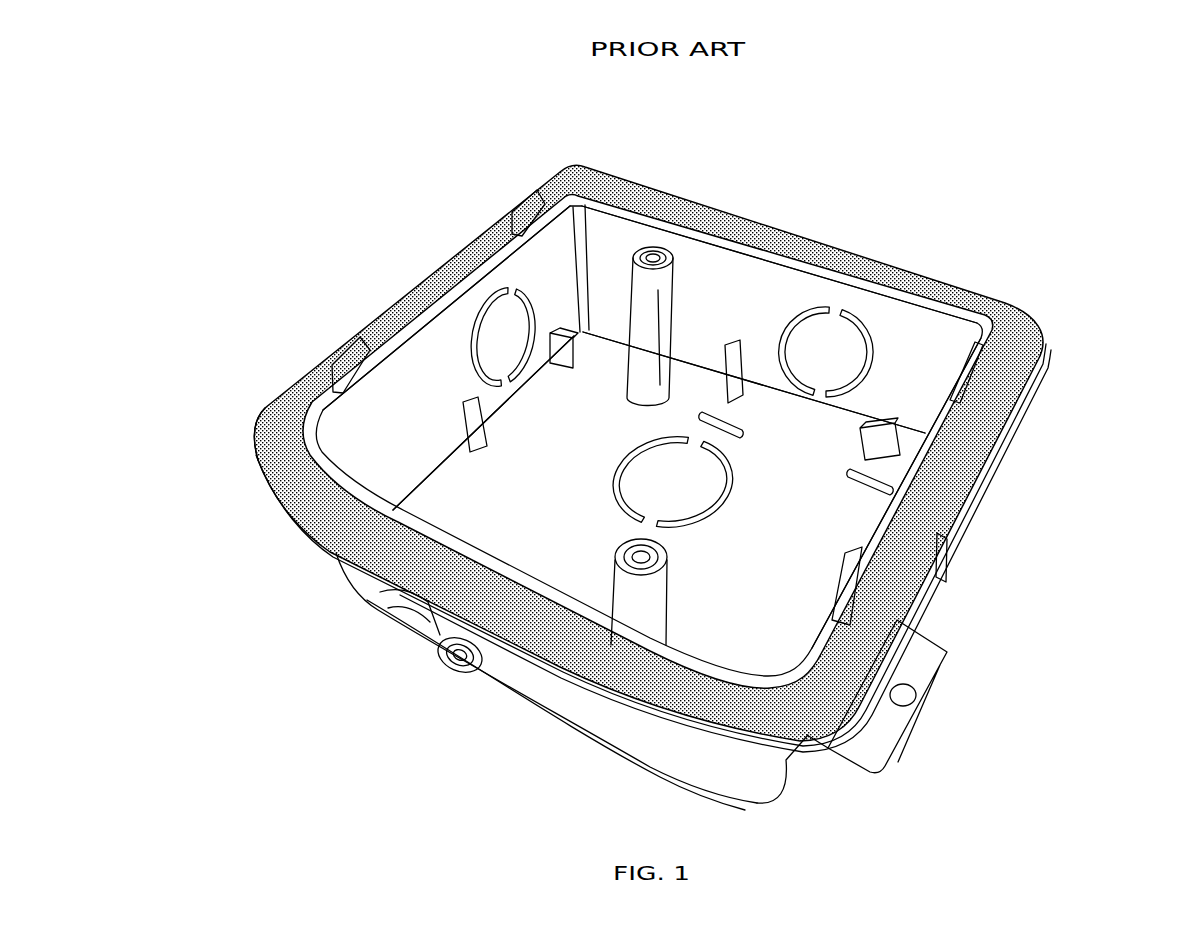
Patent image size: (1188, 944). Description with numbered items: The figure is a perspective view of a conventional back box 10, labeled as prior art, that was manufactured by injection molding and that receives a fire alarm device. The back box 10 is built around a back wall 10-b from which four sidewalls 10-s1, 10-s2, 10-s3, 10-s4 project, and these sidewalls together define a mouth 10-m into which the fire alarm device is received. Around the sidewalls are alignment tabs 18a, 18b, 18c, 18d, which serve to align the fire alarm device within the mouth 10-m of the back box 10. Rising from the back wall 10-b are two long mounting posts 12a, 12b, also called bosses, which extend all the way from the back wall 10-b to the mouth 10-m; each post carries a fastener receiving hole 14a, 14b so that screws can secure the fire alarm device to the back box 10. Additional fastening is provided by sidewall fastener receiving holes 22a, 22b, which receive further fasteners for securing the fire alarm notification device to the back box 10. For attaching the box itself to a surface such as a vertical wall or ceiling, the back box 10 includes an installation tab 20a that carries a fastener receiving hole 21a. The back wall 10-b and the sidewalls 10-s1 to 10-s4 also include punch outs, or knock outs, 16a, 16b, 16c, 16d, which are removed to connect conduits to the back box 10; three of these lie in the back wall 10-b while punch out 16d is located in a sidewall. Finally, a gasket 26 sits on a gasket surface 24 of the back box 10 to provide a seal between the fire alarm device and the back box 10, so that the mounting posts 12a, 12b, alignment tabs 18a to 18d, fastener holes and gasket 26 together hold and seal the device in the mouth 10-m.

The back box 10 is at (362, 195).
The mouth 10-m is at (990, 280).
The sidewall 10-s1 is at (428, 360).
The sidewall 10-s2 is at (761, 292).
The sidewall 10-s3 is at (637, 737).
The sidewall 10-s4 is at (815, 635).
The back wall 10-b is at (456, 506).
The mounting post 12a is at (677, 307).
The mounting post 12b is at (672, 612).
The fastener receiving hole 14a is at (657, 252).
The fastener receiving hole 14b is at (640, 548).
The punch out 16a is at (622, 462).
The punch out 16b is at (842, 322).
The punch out 16c is at (478, 325).
The punch out 16d is at (392, 603).
The alignment tab 18a is at (512, 196).
The alignment tab 18b is at (340, 350).
The alignment tab 18c is at (985, 364).
The alignment tab 18d is at (848, 556).
The installation tab 20a is at (937, 650).
The fastener receiving hole 21a is at (905, 692).
The sidewall fastener receiving hole 22a is at (942, 553).
The sidewall fastener receiving hole 22b is at (455, 667).
The gasket surface 24 is at (575, 688).
The gasket 26 is at (266, 432).